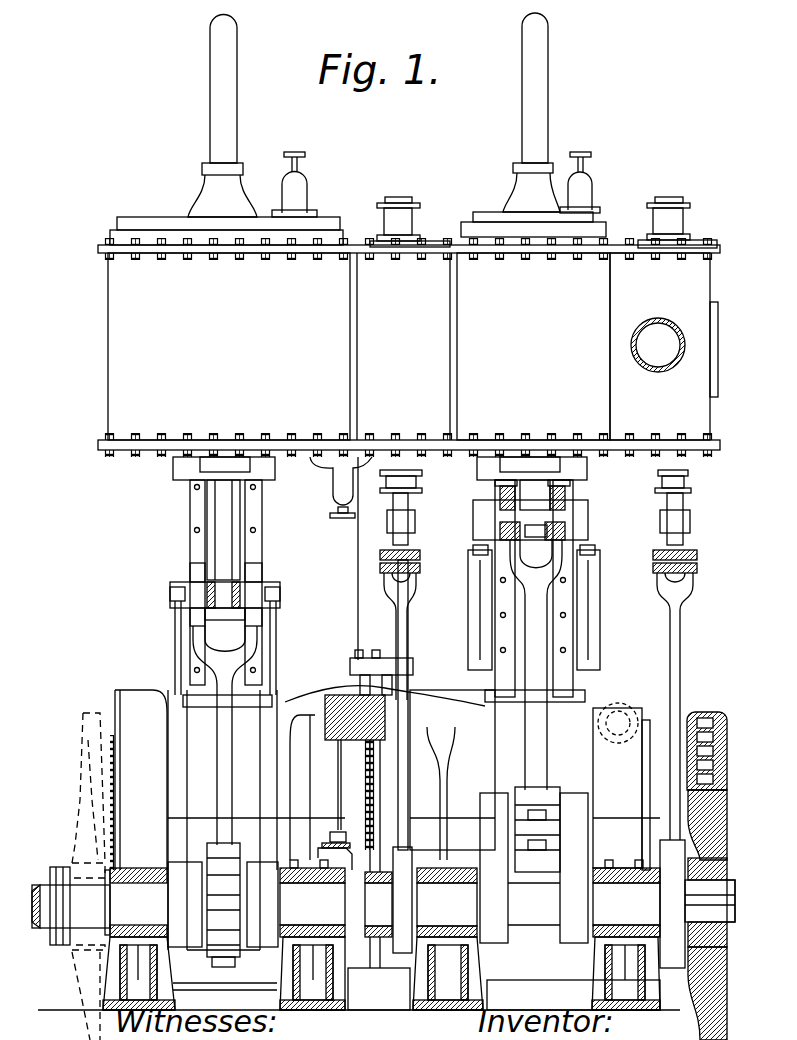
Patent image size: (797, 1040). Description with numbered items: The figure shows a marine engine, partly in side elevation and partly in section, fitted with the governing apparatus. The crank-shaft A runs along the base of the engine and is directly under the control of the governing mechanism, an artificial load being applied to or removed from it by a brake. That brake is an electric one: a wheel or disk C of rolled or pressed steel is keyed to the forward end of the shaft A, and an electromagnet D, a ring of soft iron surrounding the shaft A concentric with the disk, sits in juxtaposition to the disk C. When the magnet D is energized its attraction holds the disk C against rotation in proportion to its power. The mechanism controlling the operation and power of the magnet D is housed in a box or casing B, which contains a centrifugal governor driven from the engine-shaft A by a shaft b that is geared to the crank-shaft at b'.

The crank-shaft A is at (470, 935).
The box or casing B is at (337, 703).
The shaft b is at (347, 785).
The gearing b' is at (342, 845).
The wheel or disk C is at (688, 715).
The electromagnet D is at (721, 712).